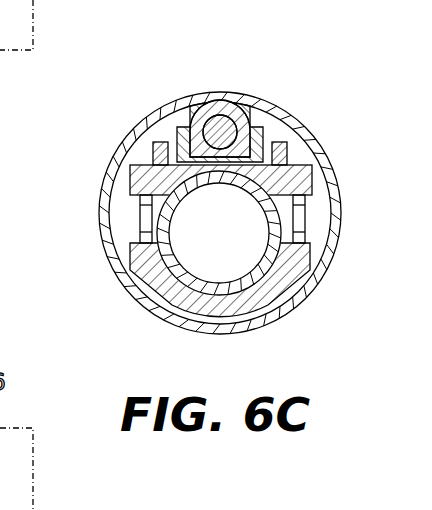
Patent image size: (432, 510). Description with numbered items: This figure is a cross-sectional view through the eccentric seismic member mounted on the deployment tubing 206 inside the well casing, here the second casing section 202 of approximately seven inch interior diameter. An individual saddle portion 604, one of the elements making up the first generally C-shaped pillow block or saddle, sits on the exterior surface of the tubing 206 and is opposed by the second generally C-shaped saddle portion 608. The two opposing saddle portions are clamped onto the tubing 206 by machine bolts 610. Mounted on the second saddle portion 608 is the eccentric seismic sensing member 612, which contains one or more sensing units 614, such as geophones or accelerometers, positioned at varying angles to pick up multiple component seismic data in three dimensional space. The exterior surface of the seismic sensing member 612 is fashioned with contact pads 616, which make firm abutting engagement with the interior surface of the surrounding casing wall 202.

The second casing section 202 is at (281, 112).
The deployment tubing 206 is at (340, 190).
The individual saddle portion 604 is at (320, 283).
The second saddle portion 608 is at (312, 142).
The machine bolts 610 is at (138, 208).
The eccentric seismic sensing member 612 is at (186, 112).
The sensing units 614 is at (214, 116).
The contact pads 616 is at (244, 108).